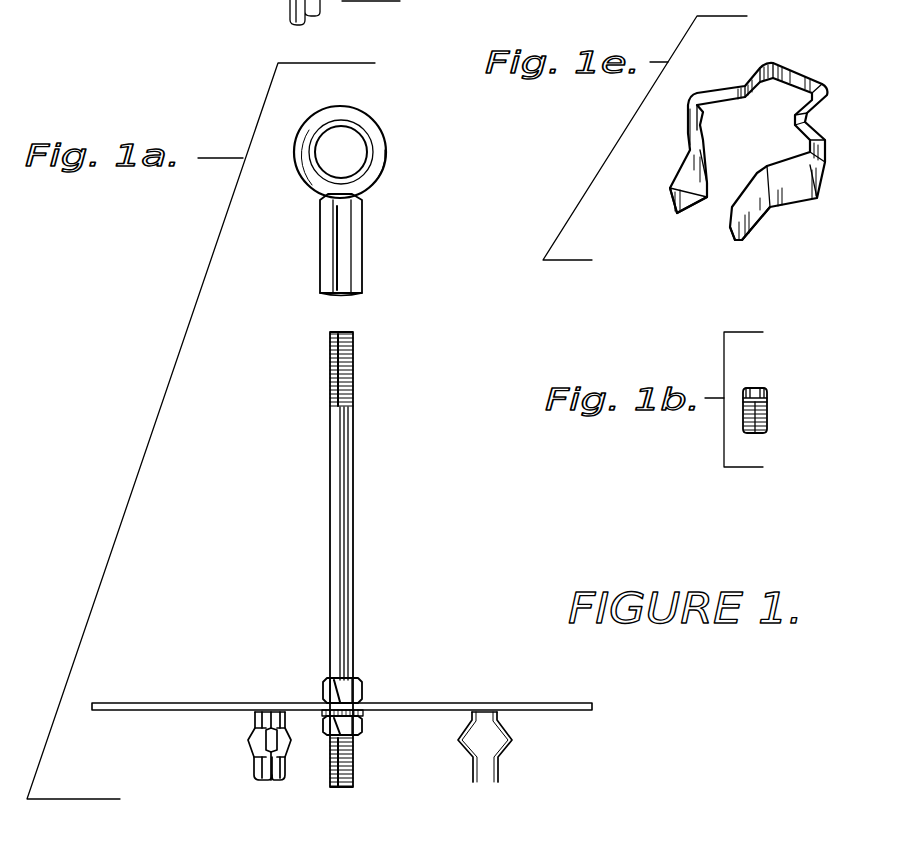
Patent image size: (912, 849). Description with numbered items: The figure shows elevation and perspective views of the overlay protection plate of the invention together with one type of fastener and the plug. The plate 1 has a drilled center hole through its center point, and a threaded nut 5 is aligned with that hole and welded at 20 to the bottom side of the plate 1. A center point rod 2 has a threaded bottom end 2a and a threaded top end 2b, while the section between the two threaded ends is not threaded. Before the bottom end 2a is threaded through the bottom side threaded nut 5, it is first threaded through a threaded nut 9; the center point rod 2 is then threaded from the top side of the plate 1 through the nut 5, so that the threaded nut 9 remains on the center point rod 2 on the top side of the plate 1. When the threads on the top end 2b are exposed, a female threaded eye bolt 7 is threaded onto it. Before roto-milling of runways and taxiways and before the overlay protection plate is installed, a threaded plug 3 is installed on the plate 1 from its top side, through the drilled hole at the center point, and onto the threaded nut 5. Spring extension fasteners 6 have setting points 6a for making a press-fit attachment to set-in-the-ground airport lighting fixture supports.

In FIG. 1A, the plate 1 is at (592, 705).
In FIG. 1A, the center point rod 2 is at (354, 503).
In FIG. 1A, the bottom end 2a is at (354, 765).
In FIG. 1A, the top end 2b is at (354, 348).
In FIG. 1B, the threaded plug 3 is at (768, 395).
In FIG. 1A, the threaded nut 5 is at (358, 737).
In FIG. 1A, the spring extension fastener 6 is at (248, 742).
In FIG. 1E, the spring extension fastener 6 is at (780, 72).
In FIG. 1E, the setting points 6a is at (668, 212).
In FIG. 1A, the female threaded eye bolt 7 is at (384, 136).
In FIG. 1A, the threaded nut 9 is at (362, 683).
In FIG. 1A, the weld 20 is at (364, 712).